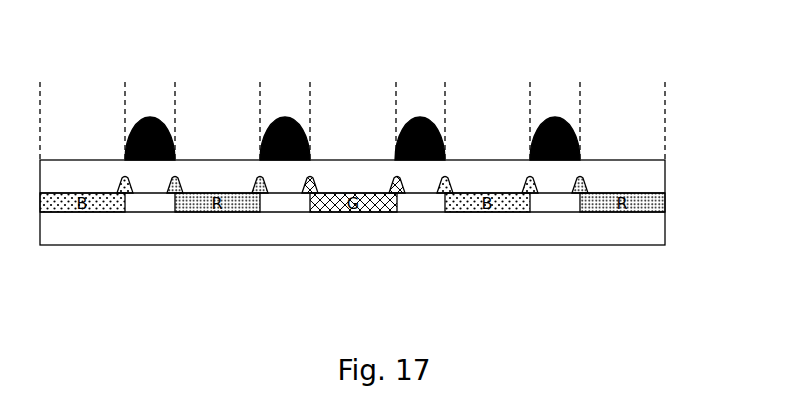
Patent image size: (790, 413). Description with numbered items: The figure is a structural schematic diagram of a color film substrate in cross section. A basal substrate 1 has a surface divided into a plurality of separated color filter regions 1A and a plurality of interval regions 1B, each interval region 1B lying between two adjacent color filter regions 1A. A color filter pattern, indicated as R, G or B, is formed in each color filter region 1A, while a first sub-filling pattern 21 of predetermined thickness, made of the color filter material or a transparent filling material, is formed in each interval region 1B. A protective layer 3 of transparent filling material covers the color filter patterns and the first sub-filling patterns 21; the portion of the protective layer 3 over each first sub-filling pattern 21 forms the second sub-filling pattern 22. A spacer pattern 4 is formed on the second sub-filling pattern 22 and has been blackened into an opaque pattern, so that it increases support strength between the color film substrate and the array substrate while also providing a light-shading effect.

The basal substrate 1 is at (633, 228).
The protective layer 3 is at (633, 177).
The spacer pattern 4 is at (282, 118).
The first sub-filling pattern 21 is at (151, 203).
The second sub-filling pattern 22 is at (148, 177).
The color filter region 1A is at (40, 122).
The interval region 1B is at (125, 102).